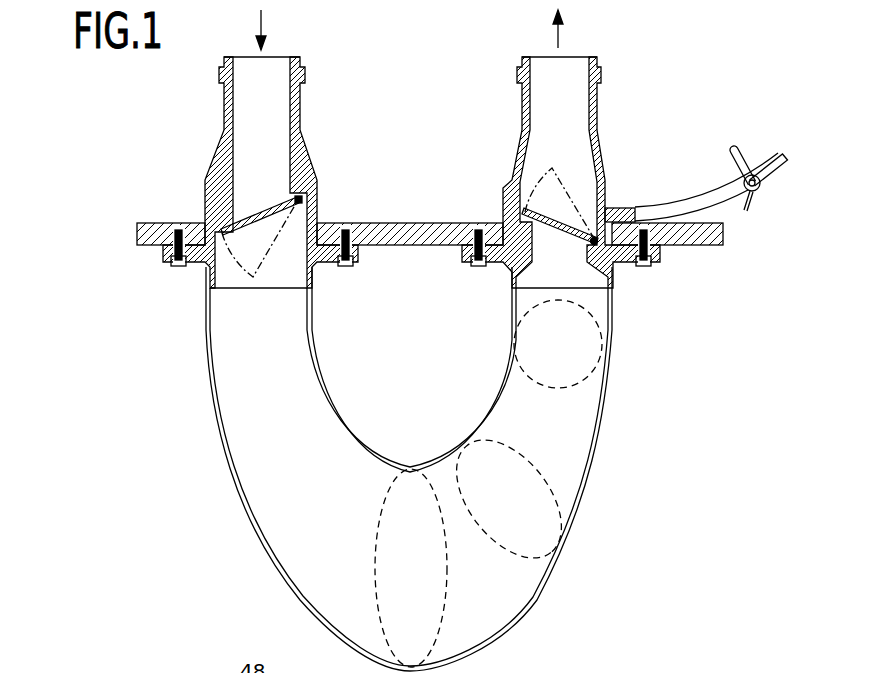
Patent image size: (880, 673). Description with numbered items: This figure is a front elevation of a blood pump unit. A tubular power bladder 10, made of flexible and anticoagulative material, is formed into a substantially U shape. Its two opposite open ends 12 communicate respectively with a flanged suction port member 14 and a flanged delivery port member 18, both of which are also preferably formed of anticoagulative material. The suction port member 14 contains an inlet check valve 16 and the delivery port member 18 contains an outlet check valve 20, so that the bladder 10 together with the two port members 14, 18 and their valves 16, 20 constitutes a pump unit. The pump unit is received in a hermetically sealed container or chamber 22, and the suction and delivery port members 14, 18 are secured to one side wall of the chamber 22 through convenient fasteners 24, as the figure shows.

The tubular power bladder 10 is at (547, 577).
The tube end connections 12 is at (208, 290).
The flanged suction port member 14 is at (208, 180).
The inlet check valve 16 is at (298, 200).
The flanged delivery port member 18 is at (608, 180).
The outlet check valve 20 is at (522, 212).
The hermetically sealed container or chamber 22 is at (383, 232).
The fasteners 24 is at (655, 258).